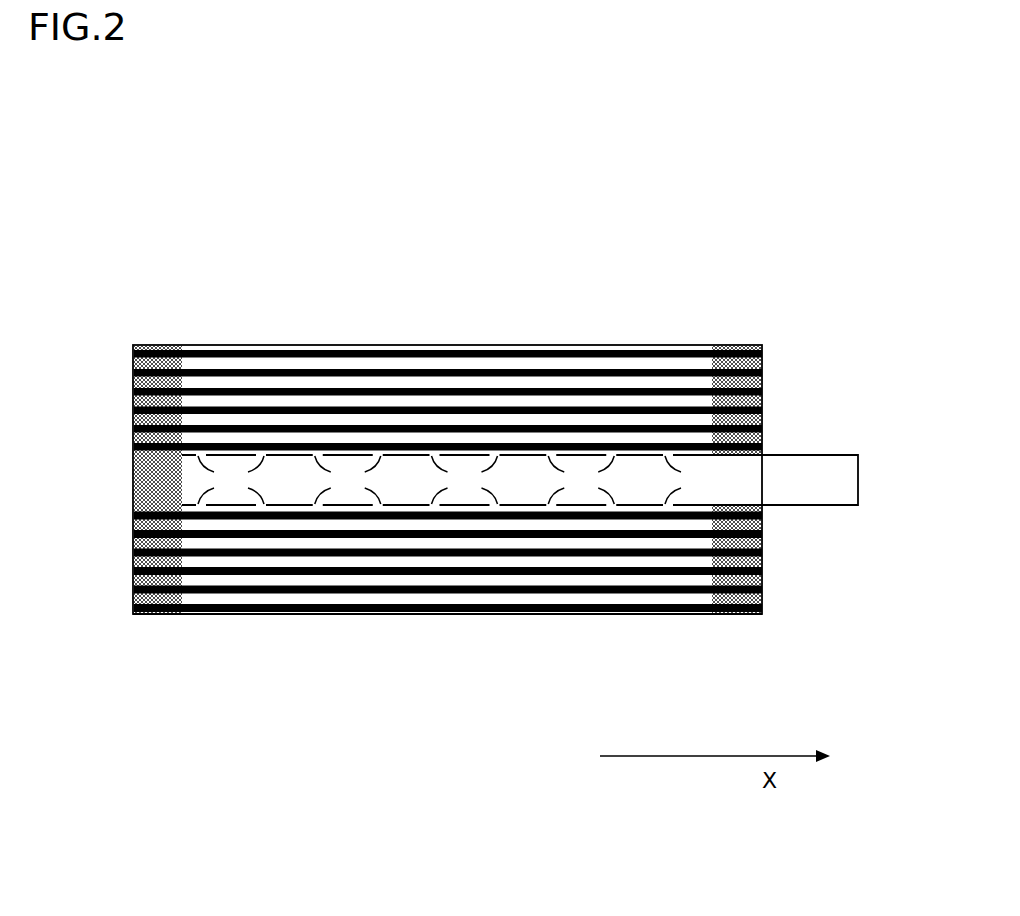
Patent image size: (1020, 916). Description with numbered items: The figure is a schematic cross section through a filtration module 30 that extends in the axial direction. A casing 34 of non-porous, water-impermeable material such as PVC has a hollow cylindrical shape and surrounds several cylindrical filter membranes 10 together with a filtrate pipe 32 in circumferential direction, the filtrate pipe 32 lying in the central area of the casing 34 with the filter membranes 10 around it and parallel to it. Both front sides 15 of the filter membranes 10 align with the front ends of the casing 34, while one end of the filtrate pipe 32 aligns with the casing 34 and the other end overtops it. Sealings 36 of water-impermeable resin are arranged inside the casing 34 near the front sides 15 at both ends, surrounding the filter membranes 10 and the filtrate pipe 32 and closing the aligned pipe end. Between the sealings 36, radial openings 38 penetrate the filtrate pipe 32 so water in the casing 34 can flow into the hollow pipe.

The filtration module 30 is at (250, 262).
The filter membranes 10 is at (300, 446).
The front sides 15 is at (133, 353).
The sealings 36 is at (133, 410).
The filtrate pipe 32 is at (837, 455).
The casing 34 is at (449, 614).
The openings 38 is at (455, 480).